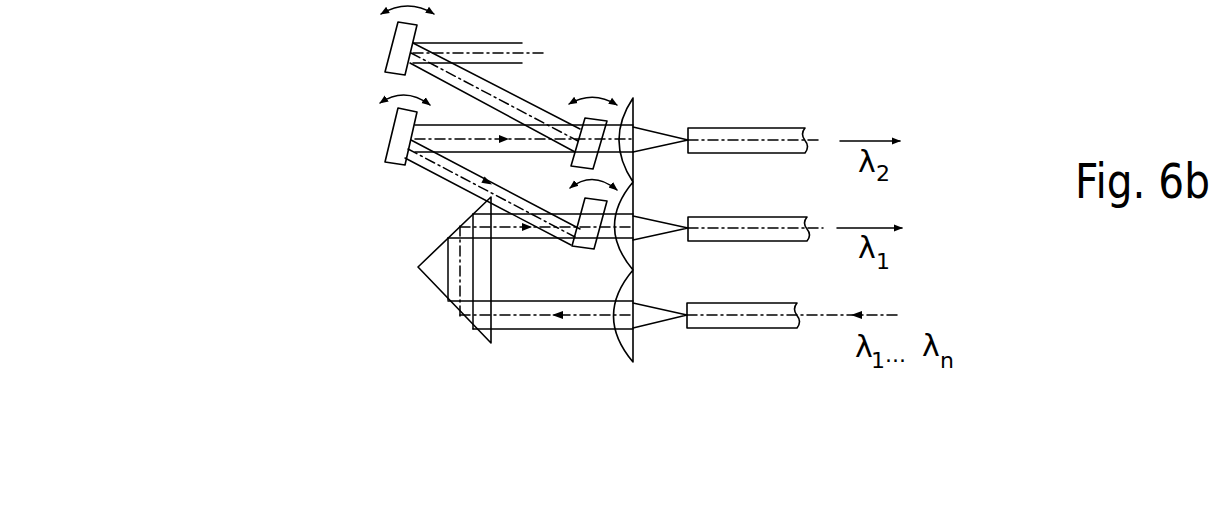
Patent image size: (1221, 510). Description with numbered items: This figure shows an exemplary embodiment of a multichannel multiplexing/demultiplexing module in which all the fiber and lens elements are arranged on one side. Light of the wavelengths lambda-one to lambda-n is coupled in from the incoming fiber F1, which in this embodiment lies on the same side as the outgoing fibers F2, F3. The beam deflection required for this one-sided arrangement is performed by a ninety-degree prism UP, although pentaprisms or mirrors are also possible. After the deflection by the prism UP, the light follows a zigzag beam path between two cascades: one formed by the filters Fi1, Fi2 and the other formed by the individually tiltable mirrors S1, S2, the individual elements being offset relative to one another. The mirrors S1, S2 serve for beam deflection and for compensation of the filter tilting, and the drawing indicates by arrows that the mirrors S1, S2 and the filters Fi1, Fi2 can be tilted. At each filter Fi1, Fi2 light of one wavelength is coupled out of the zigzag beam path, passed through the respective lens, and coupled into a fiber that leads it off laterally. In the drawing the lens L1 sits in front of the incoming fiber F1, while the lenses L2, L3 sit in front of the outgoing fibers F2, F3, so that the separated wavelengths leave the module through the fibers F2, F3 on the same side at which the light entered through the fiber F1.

The mirror S1 is at (376, 130).
The mirror S2 is at (378, 40).
The filter Fi1 is at (692, 122).
The filter Fi2 is at (591, 112).
The lens 1 L1 is at (644, 311).
The lens 2 L2 is at (648, 222).
The lens 3 L3 is at (638, 109).
The incoming fiber F1 is at (743, 338).
The outgoing fiber F2 is at (749, 250).
The outgoing fiber F3 is at (748, 120).
The 90° prism UP is at (435, 278).